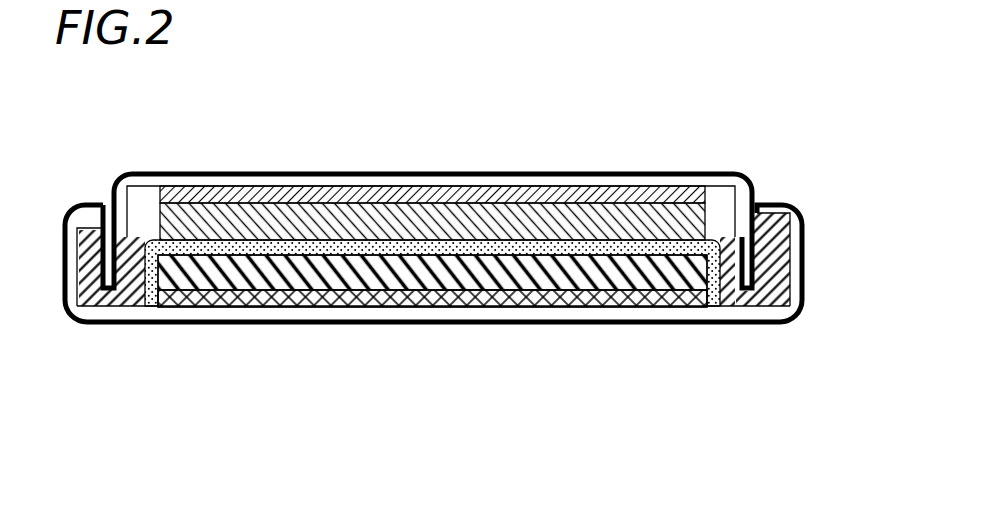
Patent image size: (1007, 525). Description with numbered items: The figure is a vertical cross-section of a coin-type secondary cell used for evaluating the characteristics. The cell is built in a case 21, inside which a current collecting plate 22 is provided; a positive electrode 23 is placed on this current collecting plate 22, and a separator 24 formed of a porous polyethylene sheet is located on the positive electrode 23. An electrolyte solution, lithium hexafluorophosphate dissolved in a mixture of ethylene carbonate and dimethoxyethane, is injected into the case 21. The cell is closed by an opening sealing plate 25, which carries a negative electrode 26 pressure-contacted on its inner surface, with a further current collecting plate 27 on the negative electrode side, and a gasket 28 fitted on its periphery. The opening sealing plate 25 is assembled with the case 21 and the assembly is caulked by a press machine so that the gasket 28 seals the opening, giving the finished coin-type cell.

The case 21 is at (217, 317).
The current collecting plate 22 is at (380, 297).
The positive electrode 23 is at (575, 307).
The separator 24 is at (632, 250).
The opening sealing plate 25 is at (182, 180).
The negative electrode 26 is at (330, 228).
The current collecting plate 27 is at (515, 195).
The gasket 28 is at (757, 308).